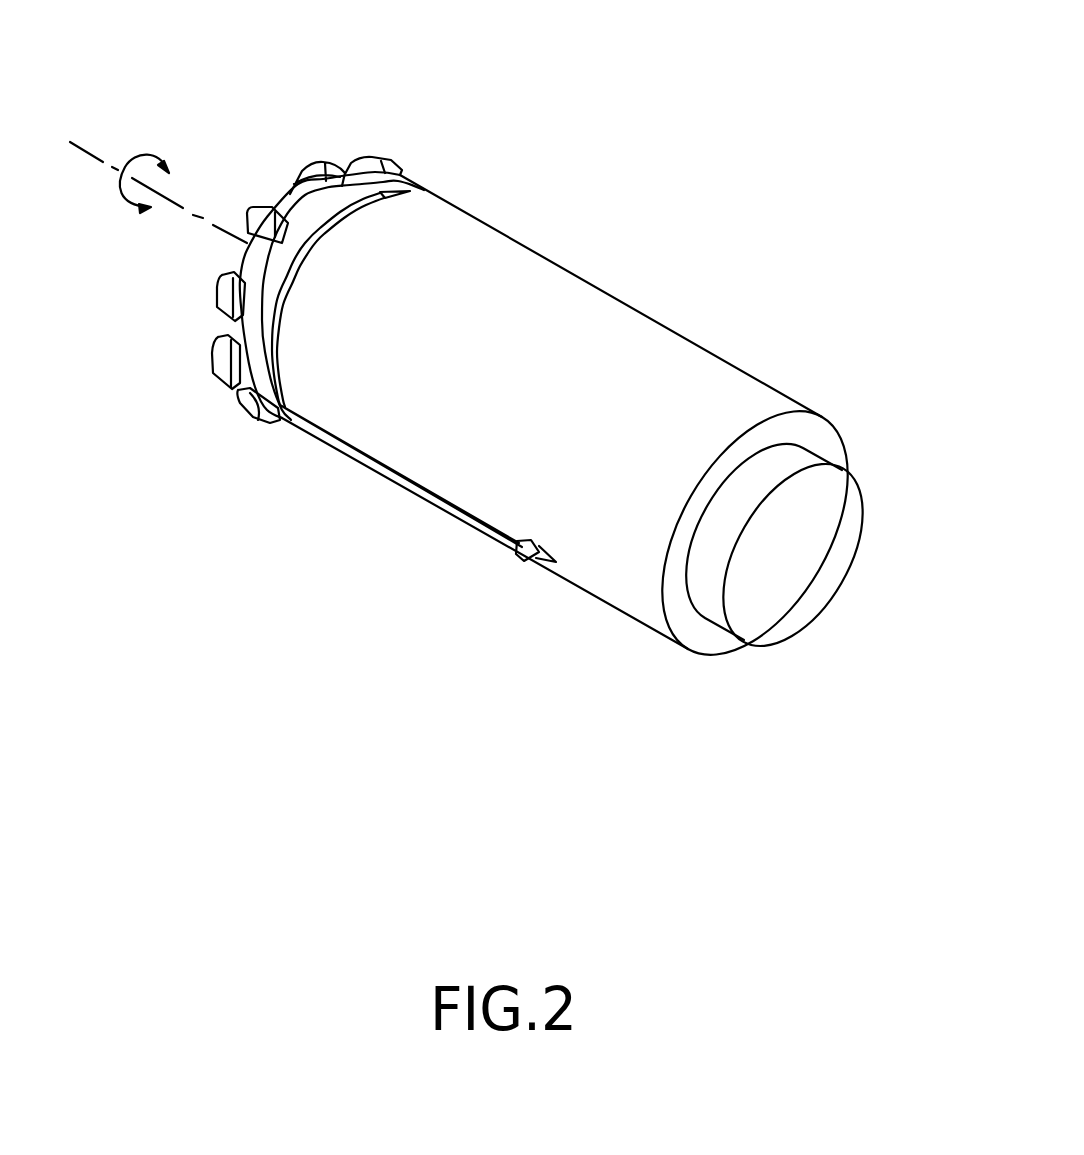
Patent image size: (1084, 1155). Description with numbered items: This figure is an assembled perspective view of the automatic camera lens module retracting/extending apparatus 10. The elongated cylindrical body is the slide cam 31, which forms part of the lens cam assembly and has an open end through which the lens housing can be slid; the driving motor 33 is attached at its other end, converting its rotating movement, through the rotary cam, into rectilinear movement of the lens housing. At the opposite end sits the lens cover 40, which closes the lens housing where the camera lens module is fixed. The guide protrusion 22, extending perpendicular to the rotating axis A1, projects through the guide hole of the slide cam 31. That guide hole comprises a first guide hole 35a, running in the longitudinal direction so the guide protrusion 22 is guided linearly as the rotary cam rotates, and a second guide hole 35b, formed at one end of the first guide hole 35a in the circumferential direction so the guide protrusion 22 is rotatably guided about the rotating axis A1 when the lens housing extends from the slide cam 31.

The automatic camera lens module retracting/extending apparatus 10 is at (569, 383).
The guide protrusion 22 is at (521, 549).
The slide cam 31 is at (612, 293).
The driving motor 33 is at (803, 582).
The first guide hole 35a is at (352, 451).
The second guide hole 35b is at (320, 247).
The lens cover 40 is at (311, 158).
The rotating axis A1 is at (92, 154).